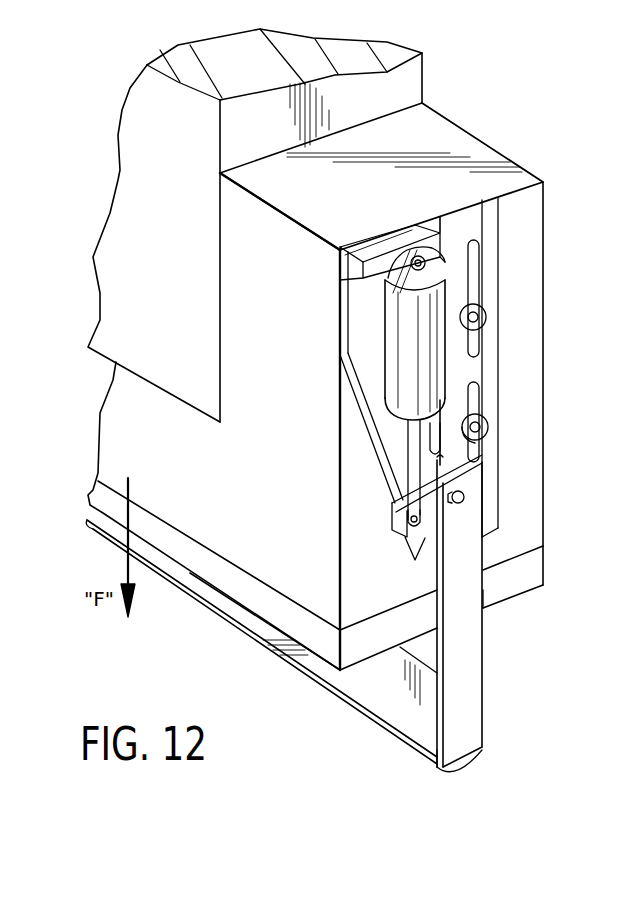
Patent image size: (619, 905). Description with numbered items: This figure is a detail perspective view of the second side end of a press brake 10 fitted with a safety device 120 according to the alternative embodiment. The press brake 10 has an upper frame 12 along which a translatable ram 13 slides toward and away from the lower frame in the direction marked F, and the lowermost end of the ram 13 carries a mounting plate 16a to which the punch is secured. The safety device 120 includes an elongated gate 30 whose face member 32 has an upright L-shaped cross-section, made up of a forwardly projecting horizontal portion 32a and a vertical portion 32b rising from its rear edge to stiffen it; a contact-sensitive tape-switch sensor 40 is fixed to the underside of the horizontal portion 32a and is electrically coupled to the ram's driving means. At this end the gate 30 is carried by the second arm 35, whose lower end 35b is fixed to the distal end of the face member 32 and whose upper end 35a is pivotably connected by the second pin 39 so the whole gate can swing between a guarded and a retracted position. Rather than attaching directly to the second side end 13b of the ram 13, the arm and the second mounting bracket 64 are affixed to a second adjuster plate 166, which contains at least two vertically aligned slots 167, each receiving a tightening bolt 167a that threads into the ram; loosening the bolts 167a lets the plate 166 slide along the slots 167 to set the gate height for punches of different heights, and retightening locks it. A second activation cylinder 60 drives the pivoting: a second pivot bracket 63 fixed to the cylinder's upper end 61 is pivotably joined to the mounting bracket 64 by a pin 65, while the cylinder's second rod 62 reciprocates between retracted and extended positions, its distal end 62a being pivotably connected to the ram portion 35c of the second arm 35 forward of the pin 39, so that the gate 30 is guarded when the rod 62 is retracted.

The press brake 10 is at (507, 60).
The upper frame 12 is at (133, 128).
The ram 13 is at (460, 153).
The second side end 13b is at (513, 228).
The mounting plate 16a is at (520, 570).
The gate 30 is at (497, 675).
The face member 32 is at (245, 650).
The horizontal portion 32a is at (358, 688).
The vertical portion 32b is at (400, 678).
The second arm 35 is at (463, 705).
The upper end of second arm 35a is at (483, 458).
The lower end of second arm 35b is at (435, 768).
The ram portion of second arm 35c is at (393, 522).
The second pin 39 is at (467, 503).
The sensor 40 is at (462, 768).
The second activation cylinder 60 is at (372, 326).
The upper end of second activation cylinder 61 is at (365, 279).
The second rod 62 is at (412, 468).
The distal end of second rod 62a is at (408, 541).
The second pivot bracket 63 is at (346, 281).
The second mounting bracket 64 is at (377, 252).
The pin 65 is at (410, 252).
The safety device 120 is at (533, 630).
The second adjuster plate 166 is at (487, 368).
The slot 167 is at (480, 265).
The tightening bolt 167a is at (487, 318).